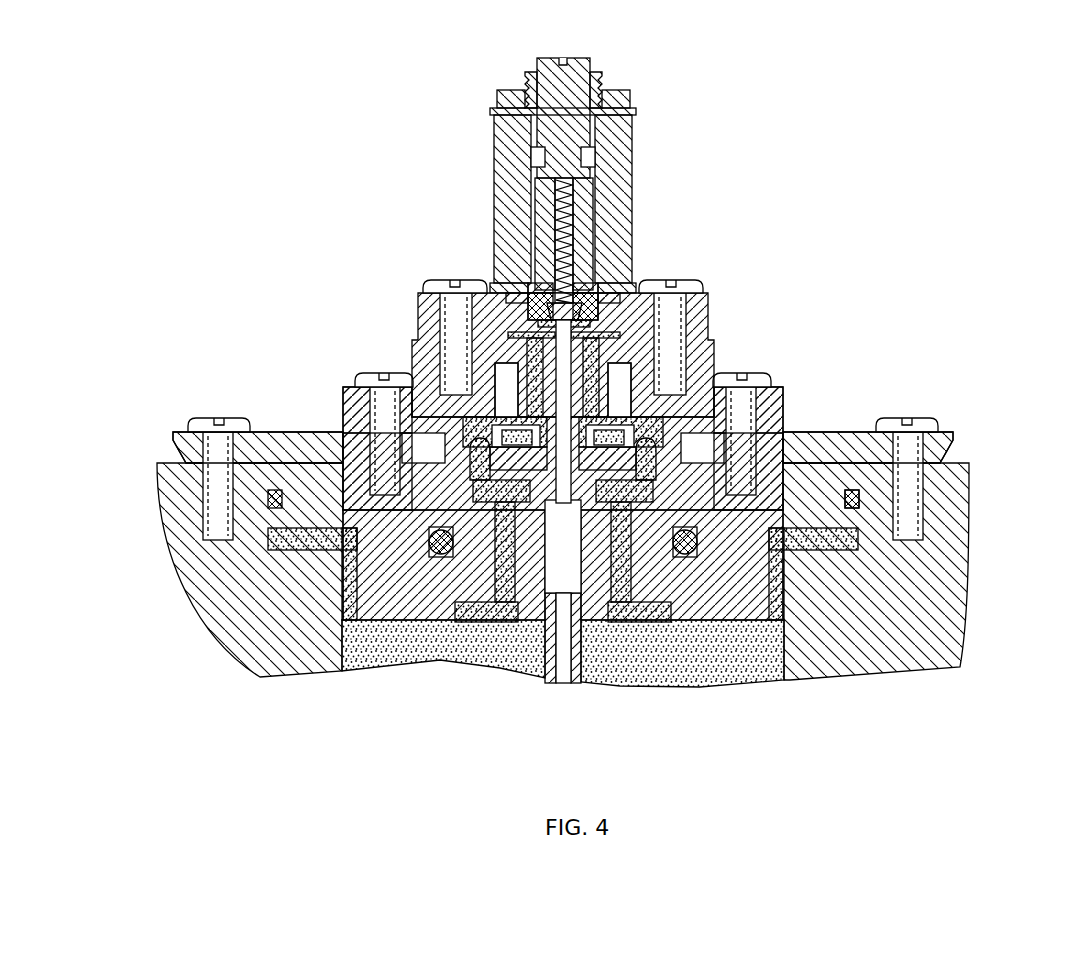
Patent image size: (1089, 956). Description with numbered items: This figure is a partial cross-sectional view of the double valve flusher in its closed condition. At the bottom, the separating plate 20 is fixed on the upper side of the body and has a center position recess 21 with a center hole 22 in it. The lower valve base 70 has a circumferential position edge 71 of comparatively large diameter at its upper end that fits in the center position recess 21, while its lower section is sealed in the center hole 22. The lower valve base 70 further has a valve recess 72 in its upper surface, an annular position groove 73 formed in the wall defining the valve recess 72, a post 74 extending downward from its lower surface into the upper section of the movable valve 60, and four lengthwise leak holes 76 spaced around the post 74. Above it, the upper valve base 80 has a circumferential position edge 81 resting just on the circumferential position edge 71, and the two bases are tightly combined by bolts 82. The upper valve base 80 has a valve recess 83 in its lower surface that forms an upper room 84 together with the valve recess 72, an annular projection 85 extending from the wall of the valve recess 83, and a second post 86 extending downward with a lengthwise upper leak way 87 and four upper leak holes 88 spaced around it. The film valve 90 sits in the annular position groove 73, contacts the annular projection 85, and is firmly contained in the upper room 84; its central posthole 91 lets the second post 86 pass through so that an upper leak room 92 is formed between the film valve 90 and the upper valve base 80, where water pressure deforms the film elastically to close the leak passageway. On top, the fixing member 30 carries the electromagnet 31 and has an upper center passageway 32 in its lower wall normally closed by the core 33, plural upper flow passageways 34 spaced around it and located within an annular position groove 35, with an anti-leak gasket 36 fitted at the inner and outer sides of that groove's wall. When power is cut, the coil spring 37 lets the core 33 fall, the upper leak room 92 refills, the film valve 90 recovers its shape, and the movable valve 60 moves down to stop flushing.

The separating plate 20 is at (285, 545).
The center position recess 21 is at (870, 483).
The center hole 22 is at (715, 630).
The fixing member 30 is at (720, 317).
The electromagnet 31 is at (634, 148).
The upper center passageway 32 is at (596, 237).
The core 33 is at (532, 232).
The upper flow passageways 34 is at (534, 290).
The annular position groove 35 is at (510, 302).
The anti-leak gasket 36 is at (609, 298).
The coil spring 37 is at (533, 202).
The movable valve 60 is at (510, 620).
The lower valve base 70 is at (416, 587).
The circumferential position edge 71 is at (360, 490).
The valve recess 72 is at (680, 447).
The annular position groove 73 is at (268, 503).
The post 74 is at (583, 662).
The leak holes 76 is at (612, 625).
The upper valve base 80 is at (408, 350).
The circumferential position edge 81 is at (343, 410).
The bolts 82 is at (753, 375).
The valve recess 83 is at (733, 417).
The upper room 84 is at (492, 615).
The annular projection 85 is at (340, 462).
The second post 86 is at (740, 408).
The upper leak way 87 is at (538, 348).
The upper leak holes 88 is at (629, 377).
The film valve 90 is at (870, 495).
The posthole 91 is at (860, 526).
The upper leak room 92 is at (500, 432).